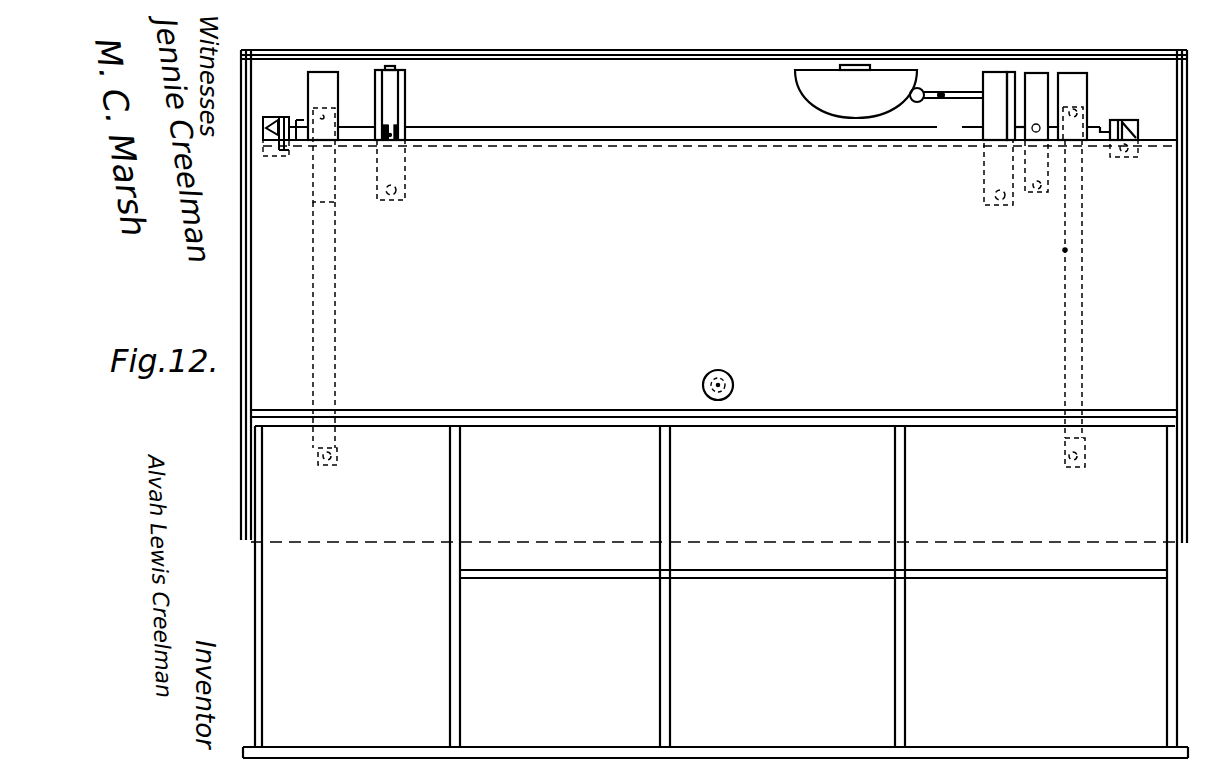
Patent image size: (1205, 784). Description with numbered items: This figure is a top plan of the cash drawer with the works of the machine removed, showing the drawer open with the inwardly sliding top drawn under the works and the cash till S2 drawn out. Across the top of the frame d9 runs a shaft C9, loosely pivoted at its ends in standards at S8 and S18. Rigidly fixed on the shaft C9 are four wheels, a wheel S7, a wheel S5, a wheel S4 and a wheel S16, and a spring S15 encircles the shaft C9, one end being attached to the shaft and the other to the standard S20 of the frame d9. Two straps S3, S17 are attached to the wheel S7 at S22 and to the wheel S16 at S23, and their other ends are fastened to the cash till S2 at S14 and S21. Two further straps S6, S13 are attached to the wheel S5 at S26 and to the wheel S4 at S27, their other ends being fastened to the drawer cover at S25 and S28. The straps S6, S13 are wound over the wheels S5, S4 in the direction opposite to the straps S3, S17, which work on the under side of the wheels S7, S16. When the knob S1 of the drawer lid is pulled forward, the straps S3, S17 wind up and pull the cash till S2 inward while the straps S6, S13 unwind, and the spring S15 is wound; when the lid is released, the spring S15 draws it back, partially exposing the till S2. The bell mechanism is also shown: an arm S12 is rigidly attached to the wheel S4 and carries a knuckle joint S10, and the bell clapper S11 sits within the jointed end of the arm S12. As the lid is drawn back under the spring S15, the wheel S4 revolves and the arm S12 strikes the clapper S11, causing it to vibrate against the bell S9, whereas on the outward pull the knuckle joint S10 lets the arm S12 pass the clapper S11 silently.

The frame d9 is at (670, 56).
The shaft C9 is at (672, 137).
The knob S1 is at (733, 377).
The cash till S2 is at (782, 459).
The strap S3 is at (336, 272).
The wheel S4 is at (1010, 73).
The wheel S5 is at (378, 88).
The strap S6 is at (392, 112).
The wheel S7 is at (323, 106).
The standard pivot S8 is at (273, 117).
The bell S9 is at (856, 91).
The knuckle joint S10 is at (937, 103).
The bell clapper S11 is at (938, 92).
The arm S12 is at (965, 90).
The strap S13 is at (997, 126).
The strap attachment point S14 is at (338, 460).
The spring S15 is at (1041, 82).
The wheel S16 is at (1080, 80).
The strap S17 is at (1083, 277).
The standard pivot S18 is at (1138, 122).
The standard S20 is at (1037, 193).
The strap attachment point S21 is at (1086, 456).
The strap attachment point S22 is at (335, 109).
The strap attachment point S23 is at (1084, 108).
The strap attachment point S25 is at (406, 193).
The strap attachment point S26 is at (408, 133).
The strap attachment point S27 is at (998, 73).
The strap attachment point S28 is at (990, 202).